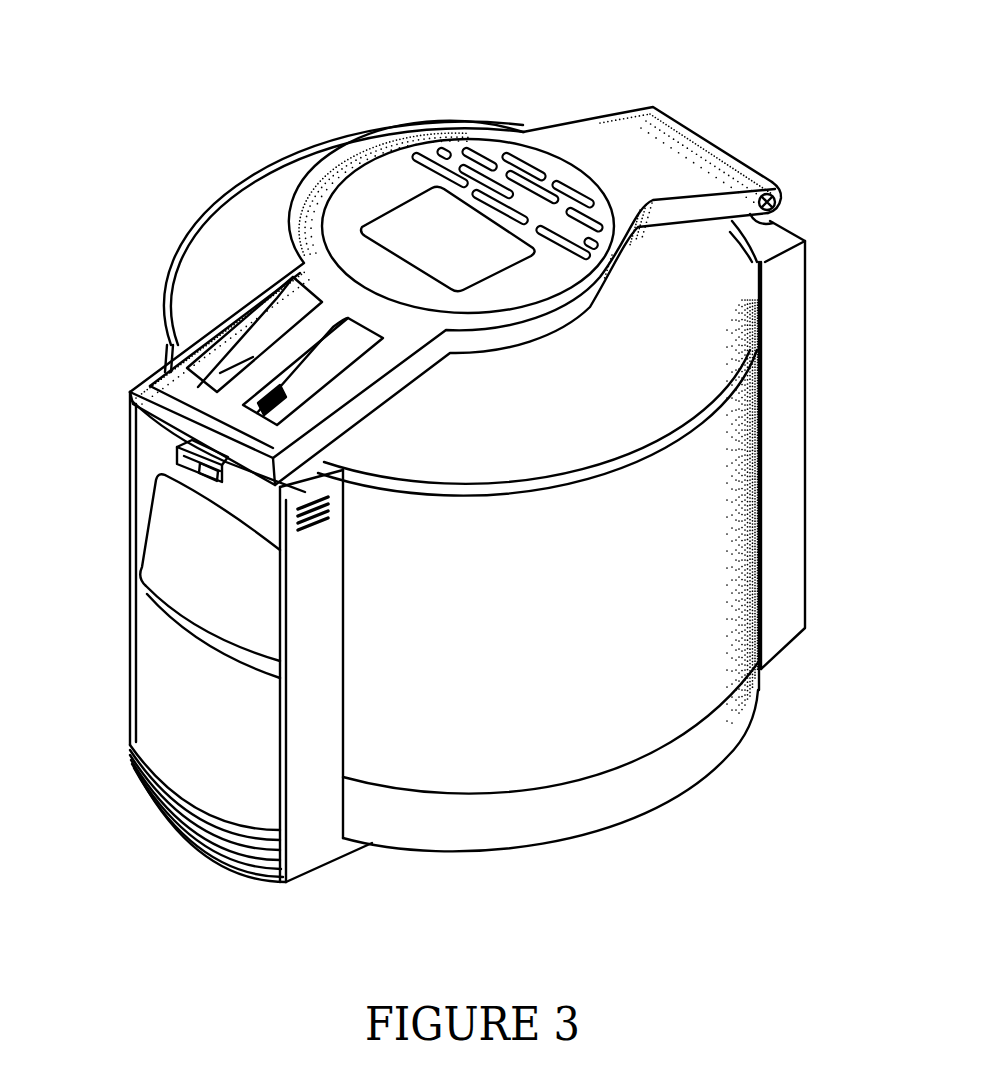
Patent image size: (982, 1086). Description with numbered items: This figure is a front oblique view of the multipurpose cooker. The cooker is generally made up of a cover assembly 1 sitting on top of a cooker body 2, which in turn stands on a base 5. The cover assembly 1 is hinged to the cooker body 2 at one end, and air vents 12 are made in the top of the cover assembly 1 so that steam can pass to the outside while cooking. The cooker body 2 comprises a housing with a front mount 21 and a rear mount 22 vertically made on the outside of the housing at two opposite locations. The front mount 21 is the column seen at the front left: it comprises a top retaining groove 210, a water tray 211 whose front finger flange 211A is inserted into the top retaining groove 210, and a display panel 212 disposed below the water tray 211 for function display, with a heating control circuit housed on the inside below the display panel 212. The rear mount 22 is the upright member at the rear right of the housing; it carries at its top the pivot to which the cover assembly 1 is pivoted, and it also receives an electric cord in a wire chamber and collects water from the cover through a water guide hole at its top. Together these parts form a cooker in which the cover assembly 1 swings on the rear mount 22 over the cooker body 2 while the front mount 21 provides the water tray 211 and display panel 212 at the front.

The cover assembly 1 is at (603, 145).
The air vents 12 is at (472, 163).
The cooker body 2 is at (690, 652).
The base 5 is at (605, 807).
The front mount 21 is at (140, 428).
The water tray 211 is at (185, 458).
The front finger flange 211A is at (209, 478).
The display panel 212 is at (165, 587).
The top retaining groove 210 is at (323, 523).
The rear mount 22 is at (786, 470).